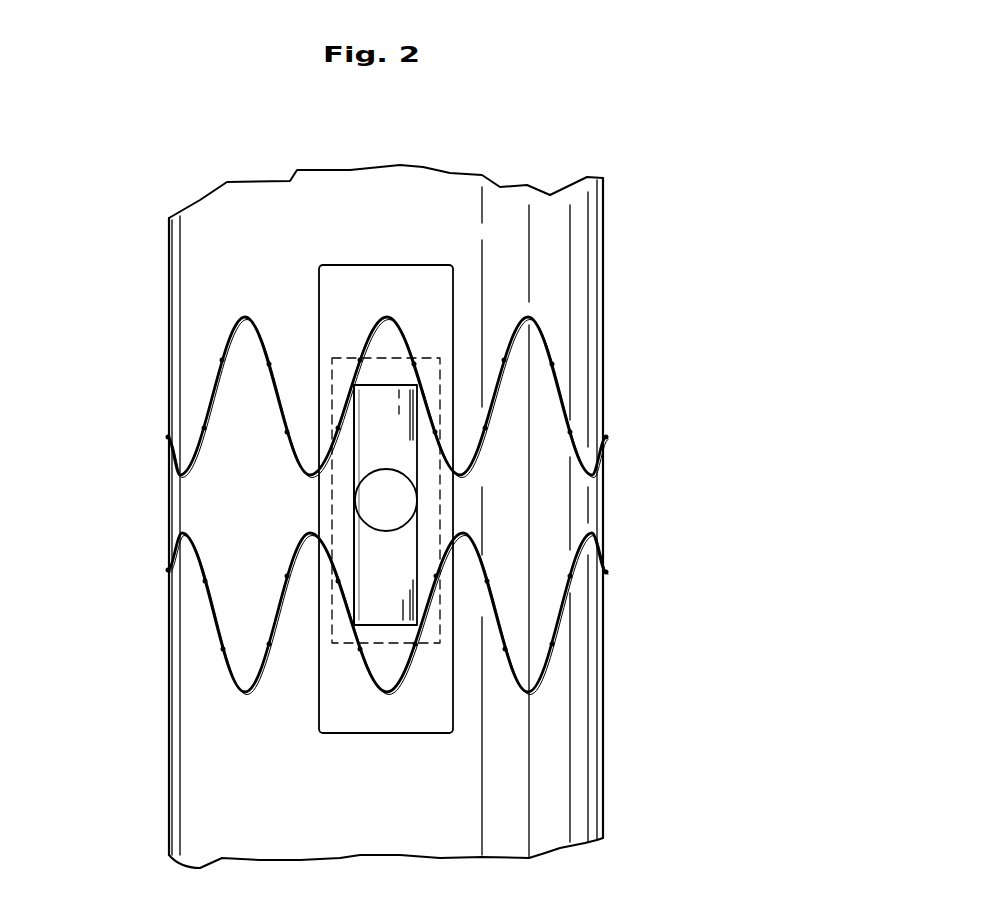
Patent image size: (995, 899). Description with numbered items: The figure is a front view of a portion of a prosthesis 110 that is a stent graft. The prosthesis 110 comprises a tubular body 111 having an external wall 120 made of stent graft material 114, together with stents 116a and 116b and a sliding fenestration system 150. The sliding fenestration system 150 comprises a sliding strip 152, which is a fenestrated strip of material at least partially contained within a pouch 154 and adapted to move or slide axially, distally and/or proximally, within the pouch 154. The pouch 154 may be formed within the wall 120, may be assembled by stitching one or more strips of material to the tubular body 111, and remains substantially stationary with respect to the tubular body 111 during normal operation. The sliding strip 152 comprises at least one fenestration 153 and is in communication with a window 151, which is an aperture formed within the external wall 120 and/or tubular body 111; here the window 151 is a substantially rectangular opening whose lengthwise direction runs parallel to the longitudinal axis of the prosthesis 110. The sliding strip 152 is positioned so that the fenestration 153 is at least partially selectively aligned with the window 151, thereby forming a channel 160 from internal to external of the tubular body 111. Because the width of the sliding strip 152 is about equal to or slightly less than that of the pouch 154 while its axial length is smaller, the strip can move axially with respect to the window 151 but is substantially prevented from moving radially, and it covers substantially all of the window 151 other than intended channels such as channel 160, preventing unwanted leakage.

The prosthesis 110 is at (126, 221).
The tubular body 111 is at (578, 347).
The stent graft material 114 is at (190, 722).
The stent 116a is at (558, 383).
The stent 116b is at (555, 632).
The external wall 120 is at (560, 808).
The sliding fenestration system 150 is at (321, 263).
The window 151 is at (424, 531).
The sliding strip 152 is at (430, 357).
The fenestration 153 is at (366, 493).
The pouch 154 is at (456, 728).
The channel 160 is at (365, 507).